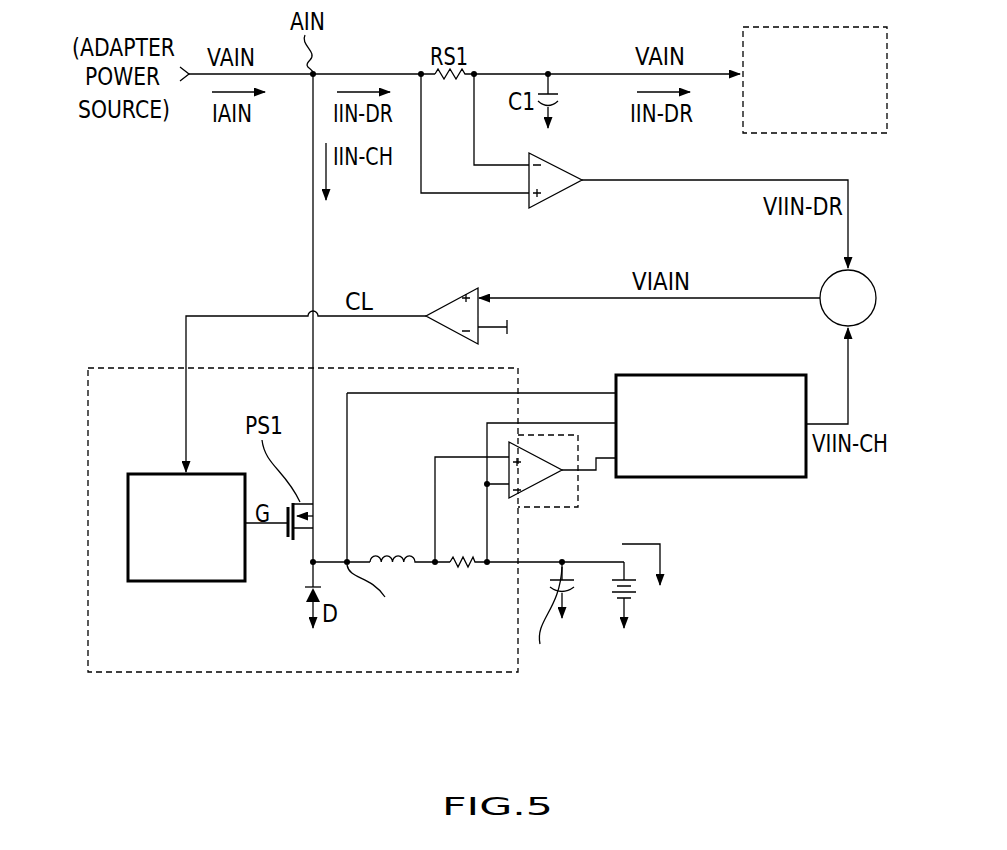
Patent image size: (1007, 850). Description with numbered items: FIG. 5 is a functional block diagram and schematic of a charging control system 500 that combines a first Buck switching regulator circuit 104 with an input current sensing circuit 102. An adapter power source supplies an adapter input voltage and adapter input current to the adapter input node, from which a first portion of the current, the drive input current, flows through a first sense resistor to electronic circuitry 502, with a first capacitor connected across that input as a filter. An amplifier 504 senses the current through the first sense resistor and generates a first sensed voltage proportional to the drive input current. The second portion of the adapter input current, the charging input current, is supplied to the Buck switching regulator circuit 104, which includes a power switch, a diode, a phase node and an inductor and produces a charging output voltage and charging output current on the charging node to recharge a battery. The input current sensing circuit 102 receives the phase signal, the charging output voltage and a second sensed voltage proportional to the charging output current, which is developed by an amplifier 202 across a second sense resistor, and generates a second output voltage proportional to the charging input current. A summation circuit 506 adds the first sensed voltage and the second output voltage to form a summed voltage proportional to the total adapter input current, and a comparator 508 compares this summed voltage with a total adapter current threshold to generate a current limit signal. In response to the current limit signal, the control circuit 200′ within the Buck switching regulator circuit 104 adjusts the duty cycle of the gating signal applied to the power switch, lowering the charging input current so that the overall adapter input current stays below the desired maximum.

The input current sensing circuit 102 is at (768, 478).
The first Buck switching regulator circuit 104 is at (115, 366).
The control circuit 200′ is at (153, 473).
The output current sense amplifier 202 is at (500, 442).
The charging control system 500 is at (686, 655).
The electronic circuitry 502 is at (830, 123).
The amplifier 504 is at (560, 197).
The summation circuit 506 is at (825, 282).
The comparator 508 is at (452, 292).